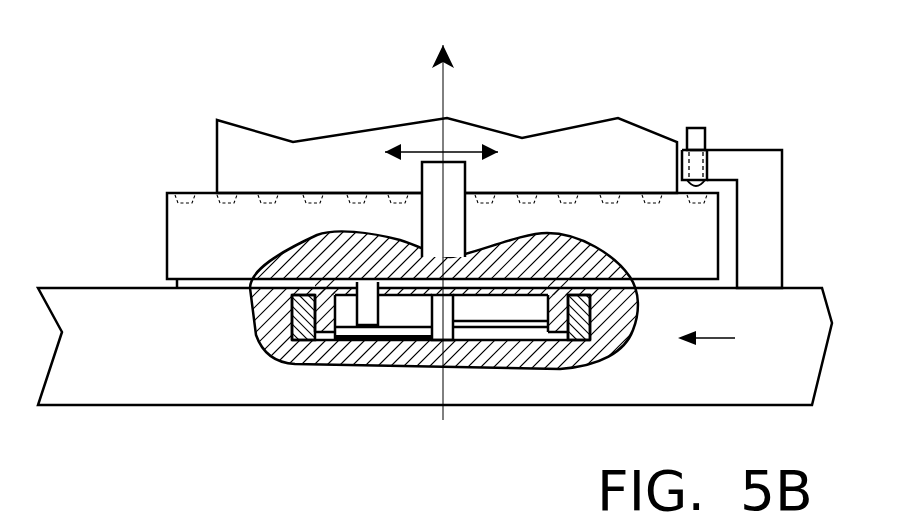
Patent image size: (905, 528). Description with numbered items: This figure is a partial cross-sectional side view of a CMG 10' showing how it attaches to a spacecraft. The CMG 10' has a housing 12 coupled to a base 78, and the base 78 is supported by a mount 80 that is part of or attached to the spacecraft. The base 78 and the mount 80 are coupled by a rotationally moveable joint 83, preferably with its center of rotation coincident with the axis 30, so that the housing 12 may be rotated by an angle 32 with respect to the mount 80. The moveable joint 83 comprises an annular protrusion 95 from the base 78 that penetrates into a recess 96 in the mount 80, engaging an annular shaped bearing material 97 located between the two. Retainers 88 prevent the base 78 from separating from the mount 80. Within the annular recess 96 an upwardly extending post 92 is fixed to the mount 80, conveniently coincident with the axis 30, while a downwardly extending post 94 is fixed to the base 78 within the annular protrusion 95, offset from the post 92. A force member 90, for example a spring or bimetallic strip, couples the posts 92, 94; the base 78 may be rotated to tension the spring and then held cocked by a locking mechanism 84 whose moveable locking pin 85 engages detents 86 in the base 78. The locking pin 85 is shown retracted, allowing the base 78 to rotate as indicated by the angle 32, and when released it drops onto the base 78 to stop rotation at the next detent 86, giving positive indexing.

The CMG 10' is at (601, 63).
The housing 12 is at (283, 175).
The axis 30 is at (436, 56).
The angle 32 is at (466, 150).
The base 78 is at (220, 265).
The mount 80 is at (128, 386).
The rotationally moveable joint 83 is at (726, 338).
The locking mechanism 84 is at (770, 147).
The locking pin 85 is at (702, 127).
The detents 86 is at (700, 204).
The retainers 88 is at (428, 182).
The force member 90 is at (403, 308).
The post 92 is at (449, 318).
The post 94 is at (367, 288).
The annular protrusion 95 is at (518, 305).
The recess 96 is at (580, 320).
The bearing material 97 is at (302, 322).